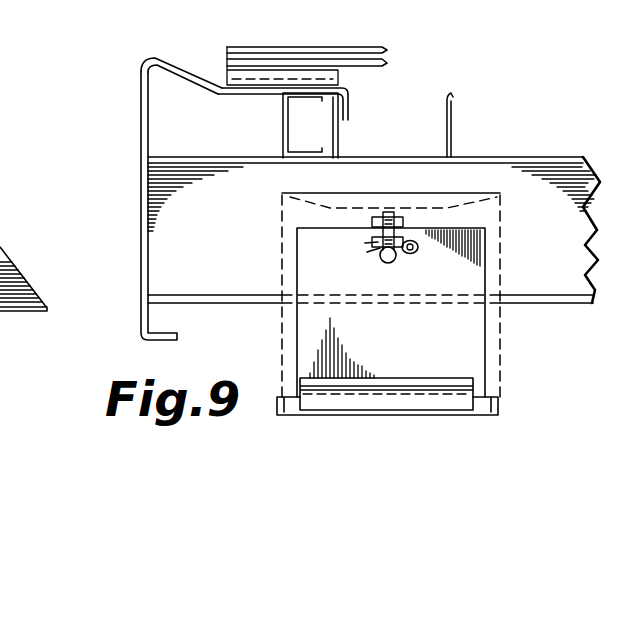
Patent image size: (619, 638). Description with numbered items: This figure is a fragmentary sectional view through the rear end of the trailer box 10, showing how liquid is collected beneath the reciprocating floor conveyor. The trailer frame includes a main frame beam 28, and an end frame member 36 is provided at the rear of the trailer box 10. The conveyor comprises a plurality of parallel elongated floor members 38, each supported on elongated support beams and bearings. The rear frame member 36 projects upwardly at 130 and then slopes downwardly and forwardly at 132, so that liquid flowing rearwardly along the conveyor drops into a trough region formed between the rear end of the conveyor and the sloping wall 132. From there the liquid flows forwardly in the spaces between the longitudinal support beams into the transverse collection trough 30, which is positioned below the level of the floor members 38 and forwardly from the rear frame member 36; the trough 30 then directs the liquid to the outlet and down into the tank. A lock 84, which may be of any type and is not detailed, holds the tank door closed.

The trailer box 10 is at (523, 124).
The main frame beam 28 is at (543, 282).
The trough 30 is at (423, 133).
The end frame member 36 is at (140, 143).
The floor member 38 is at (368, 49).
The lock 84 is at (380, 258).
The upwardly projecting portion 130 is at (163, 54).
The sloping wall 132 is at (203, 69).